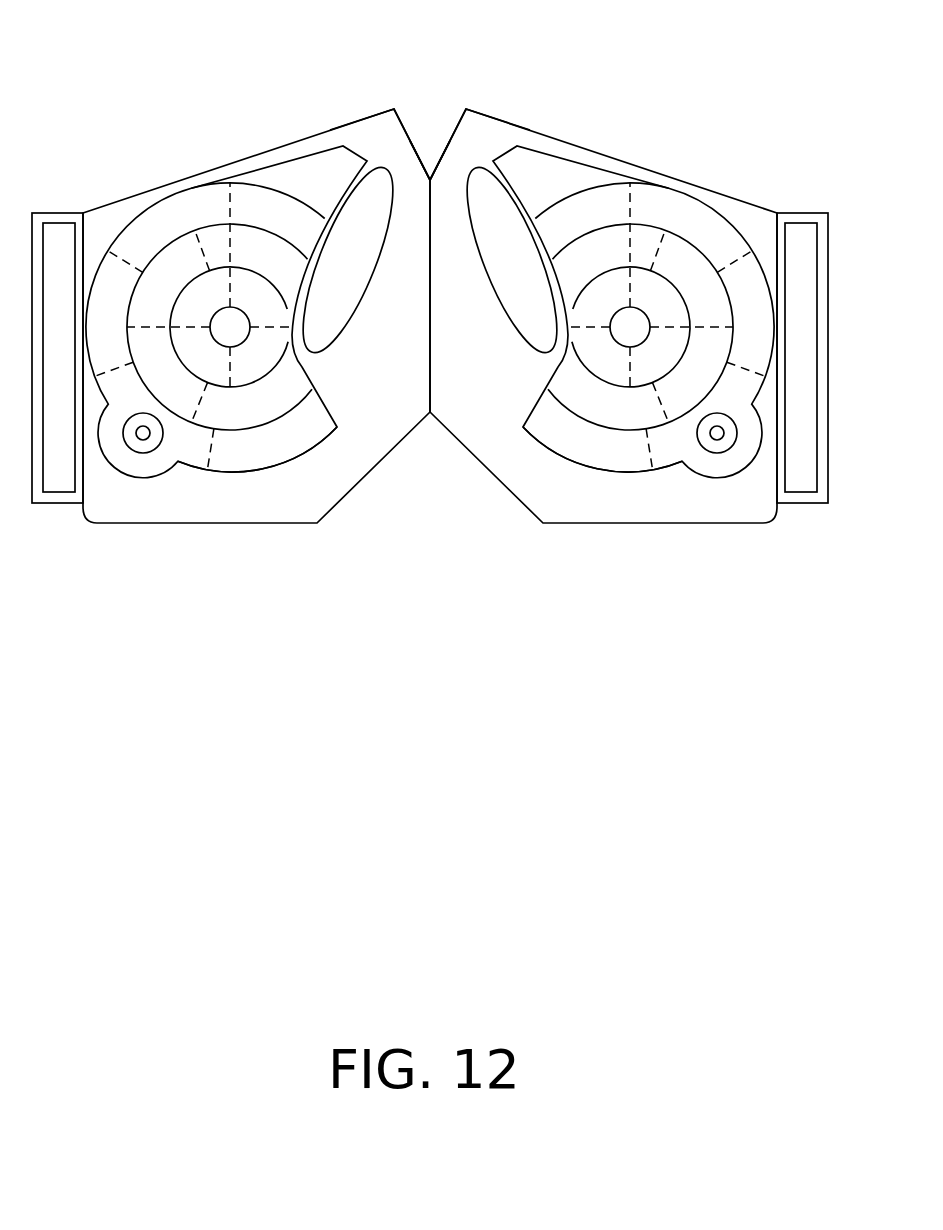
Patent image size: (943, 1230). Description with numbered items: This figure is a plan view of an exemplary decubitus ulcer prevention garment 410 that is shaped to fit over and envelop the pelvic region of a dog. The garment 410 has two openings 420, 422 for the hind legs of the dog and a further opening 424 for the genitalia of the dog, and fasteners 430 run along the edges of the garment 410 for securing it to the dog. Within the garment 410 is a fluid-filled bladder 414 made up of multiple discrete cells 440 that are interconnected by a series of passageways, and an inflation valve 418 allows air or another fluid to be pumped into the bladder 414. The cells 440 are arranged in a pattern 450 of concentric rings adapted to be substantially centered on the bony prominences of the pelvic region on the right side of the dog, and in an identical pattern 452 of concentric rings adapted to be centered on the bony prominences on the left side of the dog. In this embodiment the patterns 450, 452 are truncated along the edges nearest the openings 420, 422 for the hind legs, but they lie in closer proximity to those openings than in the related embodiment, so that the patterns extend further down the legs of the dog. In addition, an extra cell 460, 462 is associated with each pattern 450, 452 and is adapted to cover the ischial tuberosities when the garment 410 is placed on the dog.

The decubitus ulcer prevention garment 410 is at (122, 86).
The fluid-filled bladder 414 is at (180, 207).
The inflation valve 418 is at (143, 440).
The opening for hind leg 420 is at (390, 200).
The opening for hind leg 422 is at (477, 168).
The opening for genitalia 424 is at (415, 150).
The fasteners 430 is at (63, 228).
The cells 440 is at (247, 460).
The pattern of concentric rings 450 is at (214, 166).
The pattern of concentric rings 452 is at (684, 176).
The additional cell 460 is at (303, 173).
The additional cell 462 is at (543, 170).